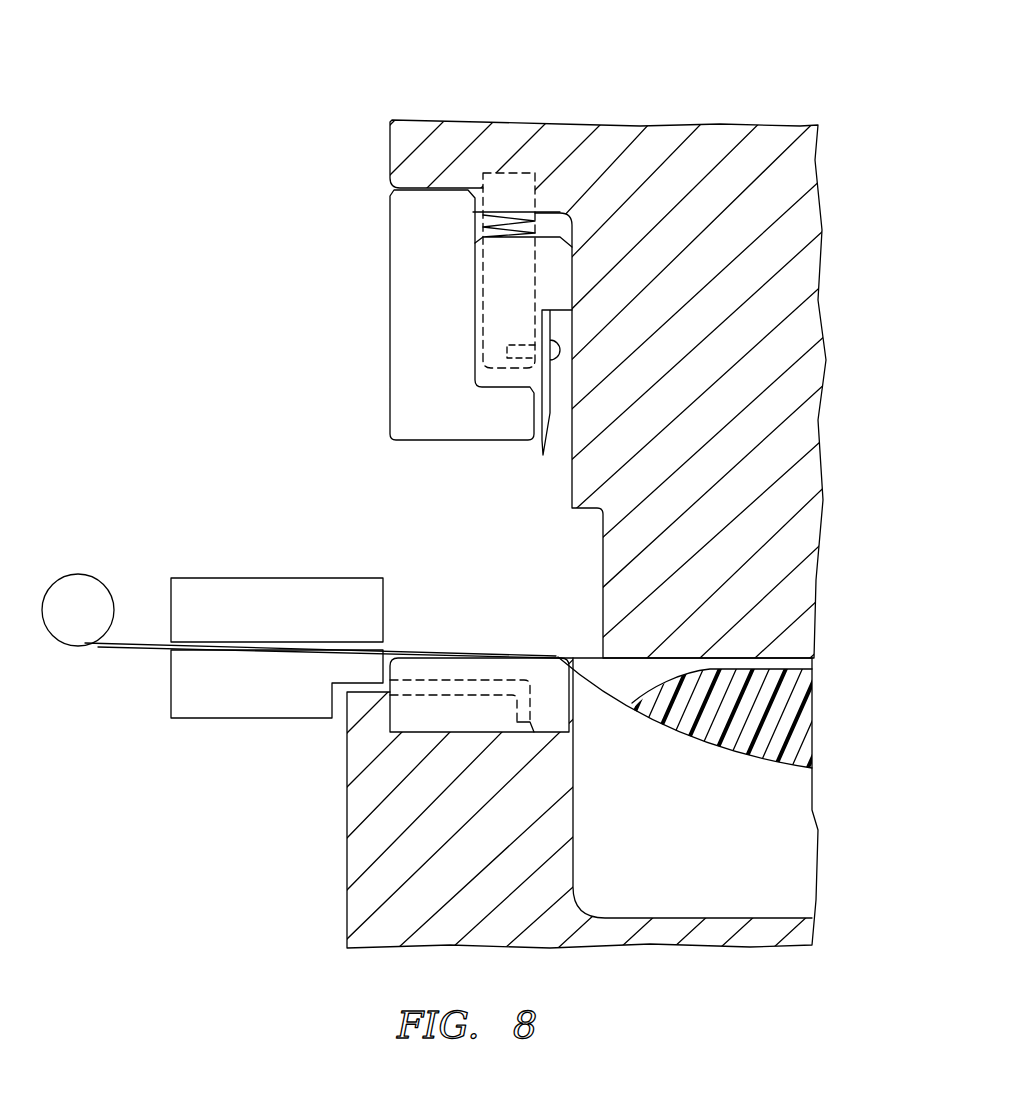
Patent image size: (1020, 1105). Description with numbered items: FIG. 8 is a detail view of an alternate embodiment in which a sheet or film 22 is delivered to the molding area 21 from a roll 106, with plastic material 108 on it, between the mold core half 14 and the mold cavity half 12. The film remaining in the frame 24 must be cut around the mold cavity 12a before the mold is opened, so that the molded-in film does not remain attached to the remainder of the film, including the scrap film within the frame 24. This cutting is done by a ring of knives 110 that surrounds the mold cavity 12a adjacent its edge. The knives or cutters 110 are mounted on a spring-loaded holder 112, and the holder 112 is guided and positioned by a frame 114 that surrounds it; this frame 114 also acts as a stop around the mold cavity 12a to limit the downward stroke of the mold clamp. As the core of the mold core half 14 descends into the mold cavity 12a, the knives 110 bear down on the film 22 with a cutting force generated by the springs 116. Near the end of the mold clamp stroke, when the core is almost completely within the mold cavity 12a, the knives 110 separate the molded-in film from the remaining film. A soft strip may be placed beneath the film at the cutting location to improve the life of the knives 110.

The mold cavity half 12 is at (806, 932).
The mold cavity 12a is at (673, 868).
The mold core half 14 is at (792, 388).
The molding area 21 is at (815, 663).
The sheet or film 22 is at (771, 768).
The frame 24 is at (295, 580).
The roll 106 is at (92, 575).
The plastic material 108 is at (816, 728).
The ring of knives 110 is at (541, 455).
The spring-loaded holder 112 is at (495, 303).
The frame 114 is at (400, 358).
The springs 116 is at (510, 214).